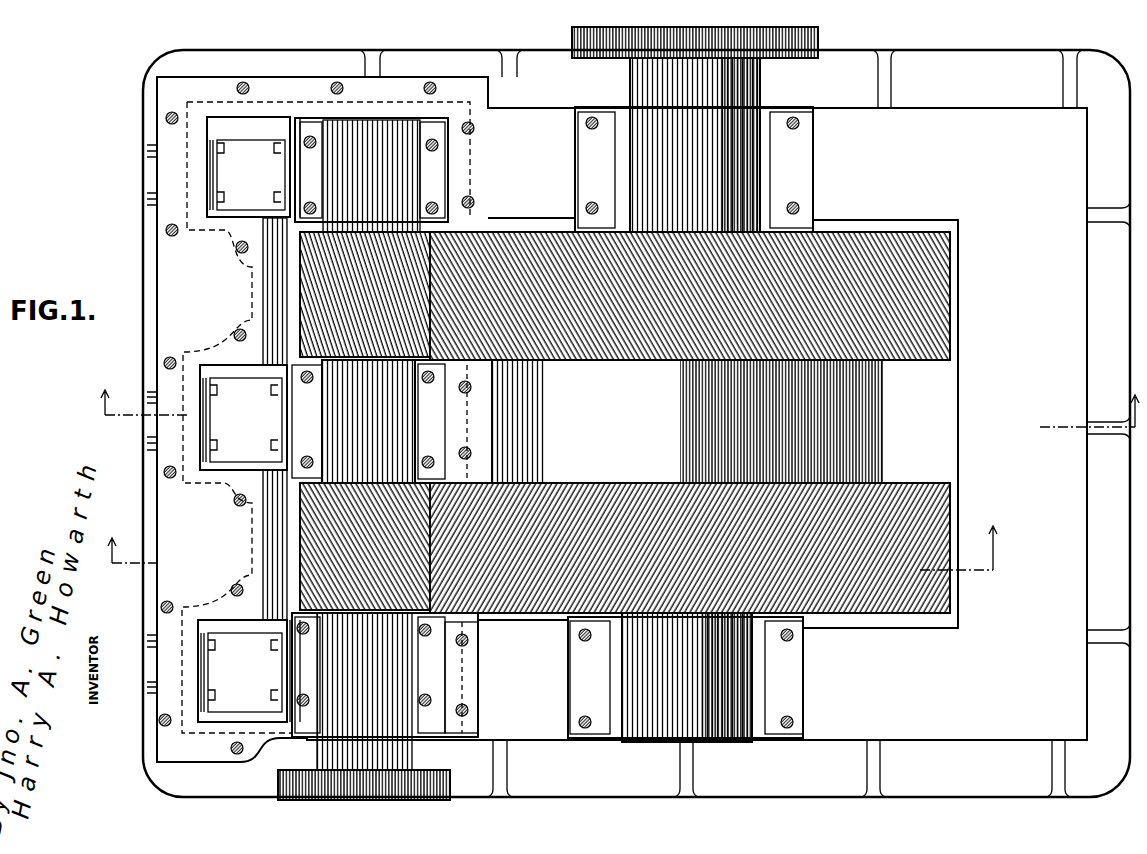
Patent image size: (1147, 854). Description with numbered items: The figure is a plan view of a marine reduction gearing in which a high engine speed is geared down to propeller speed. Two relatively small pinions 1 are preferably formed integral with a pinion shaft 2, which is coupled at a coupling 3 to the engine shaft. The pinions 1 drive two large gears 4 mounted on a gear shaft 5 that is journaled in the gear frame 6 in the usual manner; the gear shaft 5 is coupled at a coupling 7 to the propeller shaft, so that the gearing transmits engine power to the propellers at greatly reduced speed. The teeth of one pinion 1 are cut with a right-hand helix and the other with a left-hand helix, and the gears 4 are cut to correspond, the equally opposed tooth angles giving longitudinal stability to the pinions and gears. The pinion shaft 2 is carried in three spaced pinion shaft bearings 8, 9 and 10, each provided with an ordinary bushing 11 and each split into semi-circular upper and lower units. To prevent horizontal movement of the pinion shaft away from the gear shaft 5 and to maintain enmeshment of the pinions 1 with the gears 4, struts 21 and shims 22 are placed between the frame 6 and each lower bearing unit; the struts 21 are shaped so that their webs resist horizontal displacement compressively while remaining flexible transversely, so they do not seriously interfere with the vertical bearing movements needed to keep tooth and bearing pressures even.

The pinion 1 is at (327, 282).
The pinion shaft 2 is at (353, 421).
The coupling 3 is at (280, 780).
The gear 4 is at (917, 300).
The gear shaft 5 is at (694, 145).
The gear frame 6 is at (622, 423).
The coupling 7 is at (577, 40).
The pinion shaft bearing 8 is at (432, 163).
The pinion shaft bearing 9 is at (428, 438).
The pinion shaft bearing 10 is at (430, 687).
The bushing 11 is at (420, 187).
The strut 21 is at (244, 419).
The shim 22 is at (208, 177).